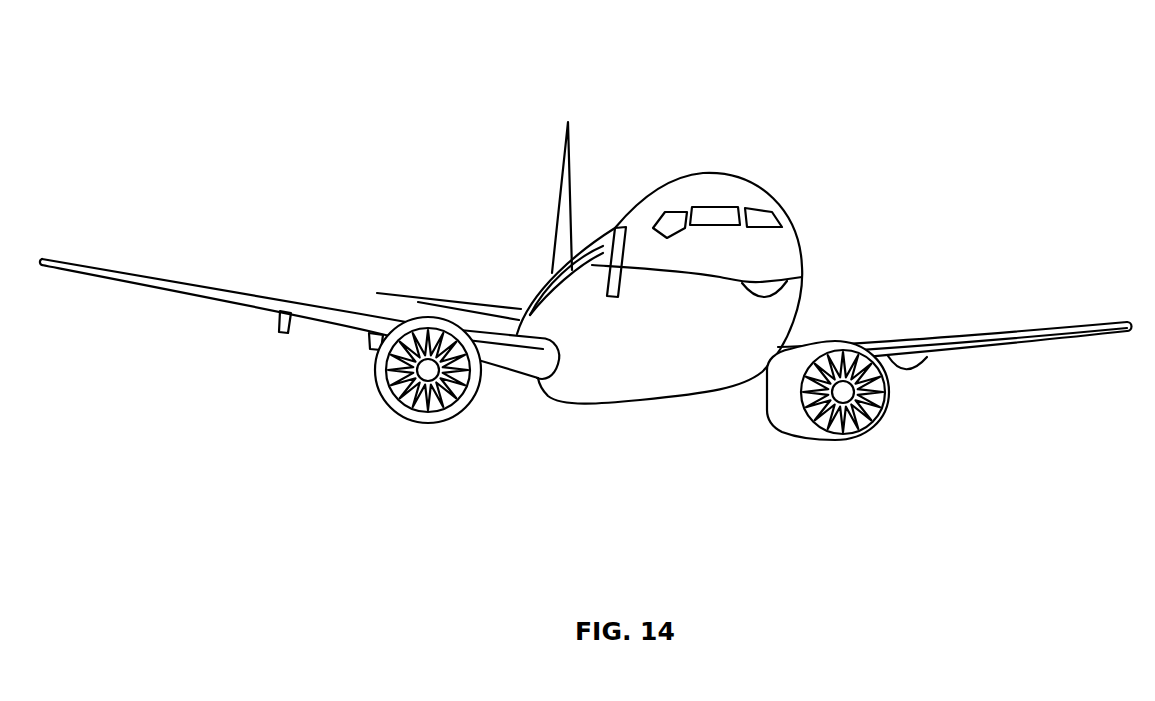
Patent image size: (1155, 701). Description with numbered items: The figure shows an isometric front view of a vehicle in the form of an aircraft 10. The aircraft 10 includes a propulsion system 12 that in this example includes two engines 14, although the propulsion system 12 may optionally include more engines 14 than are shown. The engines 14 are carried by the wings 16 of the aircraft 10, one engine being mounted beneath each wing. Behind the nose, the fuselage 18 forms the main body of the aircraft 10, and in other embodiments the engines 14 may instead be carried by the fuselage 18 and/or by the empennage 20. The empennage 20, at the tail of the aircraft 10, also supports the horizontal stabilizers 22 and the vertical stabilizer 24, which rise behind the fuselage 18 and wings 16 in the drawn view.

The aircraft 10 is at (316, 66).
The propulsion system 12 is at (940, 434).
The engines 14 is at (420, 422).
The wings 16 is at (187, 287).
The fuselage 18 is at (800, 242).
The empennage 20 is at (553, 277).
The horizontal stabilizers 22 is at (420, 298).
The vertical stabilizer 24 is at (565, 166).